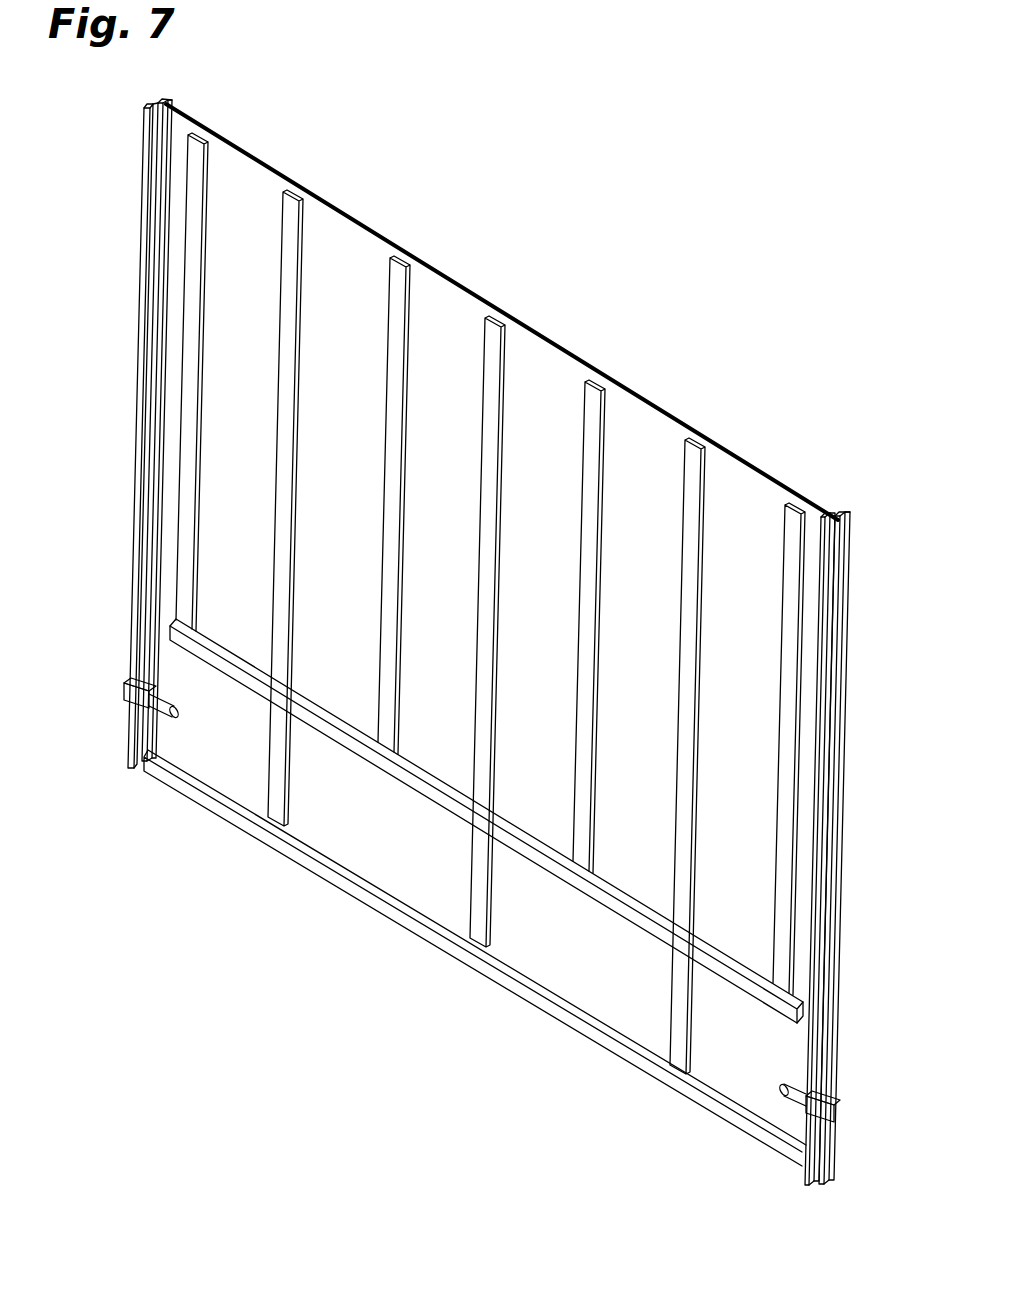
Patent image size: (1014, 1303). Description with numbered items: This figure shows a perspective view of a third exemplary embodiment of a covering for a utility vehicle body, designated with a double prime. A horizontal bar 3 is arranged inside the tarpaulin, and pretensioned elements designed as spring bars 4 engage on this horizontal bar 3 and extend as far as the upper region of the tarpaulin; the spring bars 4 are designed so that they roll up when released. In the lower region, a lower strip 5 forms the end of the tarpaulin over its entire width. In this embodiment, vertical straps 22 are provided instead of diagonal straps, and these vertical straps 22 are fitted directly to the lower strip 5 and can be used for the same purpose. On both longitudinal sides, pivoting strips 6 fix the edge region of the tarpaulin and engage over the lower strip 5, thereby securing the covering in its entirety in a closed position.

The pivoting strip 6 is at (130, 446).
The spring bar 4 is at (197, 421).
The vertical strap 22 is at (291, 359).
The horizontal bar 3 is at (630, 912).
The lower strip 5 is at (527, 994).